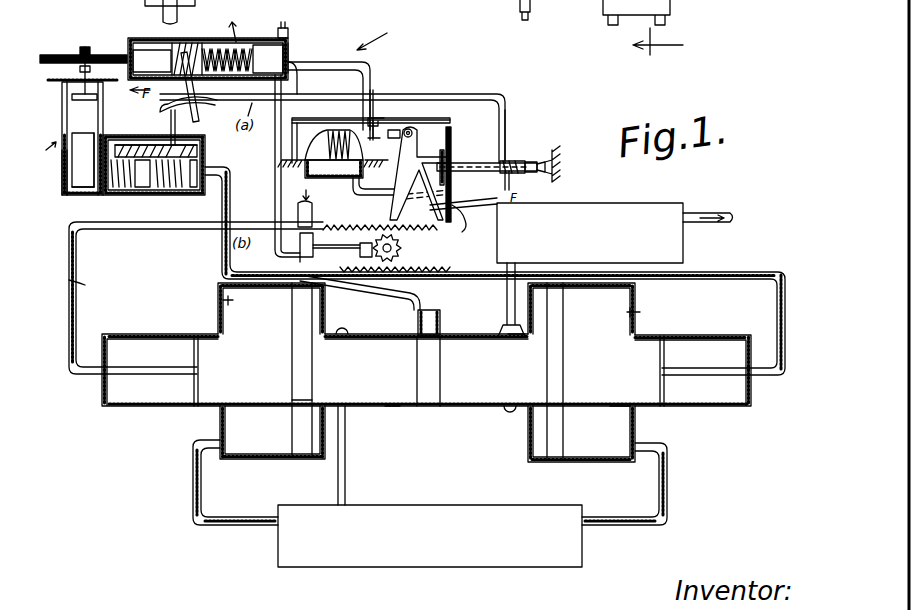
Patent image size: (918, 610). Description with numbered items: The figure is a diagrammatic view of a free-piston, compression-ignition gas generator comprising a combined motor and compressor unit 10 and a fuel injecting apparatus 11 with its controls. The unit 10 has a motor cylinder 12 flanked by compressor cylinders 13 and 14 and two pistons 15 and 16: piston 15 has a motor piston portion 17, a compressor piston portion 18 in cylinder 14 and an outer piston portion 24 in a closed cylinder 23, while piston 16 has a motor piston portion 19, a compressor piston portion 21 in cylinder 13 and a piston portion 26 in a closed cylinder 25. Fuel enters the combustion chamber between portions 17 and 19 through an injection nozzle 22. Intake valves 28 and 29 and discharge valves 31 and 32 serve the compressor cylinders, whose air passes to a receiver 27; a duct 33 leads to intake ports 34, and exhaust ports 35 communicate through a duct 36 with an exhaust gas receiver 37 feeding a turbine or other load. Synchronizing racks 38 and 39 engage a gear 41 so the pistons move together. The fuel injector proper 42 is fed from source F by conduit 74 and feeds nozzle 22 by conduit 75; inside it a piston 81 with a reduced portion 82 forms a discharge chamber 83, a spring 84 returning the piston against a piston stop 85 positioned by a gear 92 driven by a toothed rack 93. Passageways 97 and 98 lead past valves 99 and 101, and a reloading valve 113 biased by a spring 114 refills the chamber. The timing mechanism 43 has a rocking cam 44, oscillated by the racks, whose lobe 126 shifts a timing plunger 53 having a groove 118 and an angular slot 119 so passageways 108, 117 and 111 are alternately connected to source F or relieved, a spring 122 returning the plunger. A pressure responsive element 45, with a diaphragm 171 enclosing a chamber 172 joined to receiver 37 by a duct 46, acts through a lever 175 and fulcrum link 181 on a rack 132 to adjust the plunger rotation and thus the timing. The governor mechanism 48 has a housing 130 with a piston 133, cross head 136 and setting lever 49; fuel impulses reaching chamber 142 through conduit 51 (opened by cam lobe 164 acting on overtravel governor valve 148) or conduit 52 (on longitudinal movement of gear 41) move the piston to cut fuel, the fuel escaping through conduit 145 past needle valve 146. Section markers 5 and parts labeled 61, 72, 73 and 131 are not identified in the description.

The valve 5 is at (658, 44).
The combined motor and compressor unit 10 is at (762, 415).
The fuel injecting apparatus 11 is at (377, 32).
The motor cylinder 12 is at (470, 408).
The compressor cylinder 13 is at (274, 462).
The compressor cylinder 14 is at (578, 463).
The piston 15 is at (567, 417).
The piston 16 is at (288, 416).
The motor piston portion 17 is at (463, 353).
The compressor piston portion 18 is at (552, 320).
The motor piston portion 19 is at (393, 408).
The compressor piston portion 21 is at (290, 312).
The injection nozzle 22 is at (436, 312).
The cylinder 23 is at (718, 406).
The piston portion 24 is at (617, 408).
The cylinder 25 is at (130, 405).
The piston portion 26 is at (240, 397).
The receiver 27 is at (338, 568).
The intake valve 28 is at (618, 318).
The intake valve 29 is at (240, 300).
The discharge valve 31 is at (655, 437).
The discharge valve 32 is at (204, 440).
The duct 33 is at (348, 472).
The air intake ports 34 is at (338, 338).
The exhaust ports 35 is at (517, 338).
The duct 36 is at (502, 290).
The exhaust gas receiver 37 is at (650, 203).
The synchronizing rack 38 is at (710, 279).
The synchronizing rack 39 is at (86, 285).
The gear 41 is at (409, 254).
The fuel injector proper 42 is at (42, 150).
The timing mechanism 43 is at (472, 142).
The rocking cam 44 is at (390, 204).
The pressure responsive element 45 is at (313, 145).
The duct 46 is at (485, 200).
The governor mechanism 48 is at (235, 21).
The lever 49 is at (180, 93).
The conduit 51 is at (336, 62).
The conduit 52 is at (268, 197).
The timing plunger 53 is at (540, 160).
The shaft 61 is at (360, 245).
The valve stem 72 is at (311, 261).
The collar 73 is at (364, 257).
The conduit 74 is at (123, 94).
The conduit 75 is at (218, 258).
The piston 81 is at (62, 123).
The reduced portion 82 is at (80, 193).
The fuel ejection chamber 83 is at (99, 193).
The spring 84 is at (62, 183).
The piston stop 85 is at (70, 97).
The gear 92 is at (90, 50).
The toothed rack 93 is at (46, 52).
The passageway 97 is at (147, 145).
The passageway 98 is at (128, 145).
The valve 99 is at (180, 188).
The valve 101 is at (197, 188).
The passageway 108 is at (508, 104).
The passageway 111 is at (512, 185).
The reloading valve 113 is at (143, 187).
The spring 114 is at (124, 187).
The passageway 117 is at (512, 112).
The circumferential groove 118 is at (512, 161).
The slot 119 is at (486, 163).
The spring 122 is at (556, 155).
The lobe 126 is at (438, 160).
The housing 130 is at (145, 40).
The vertical bar 131 is at (454, 178).
The rack 132 is at (468, 226).
The piston 133 is at (262, 45).
The cross head 136 is at (204, 43).
The chamber 142 is at (300, 48).
The conduit 145 is at (290, 38).
The needle valve 146 is at (285, 27).
The overtravel governor valve 148 is at (375, 184).
The lobe 164 is at (404, 125).
The diaphragm 171 is at (333, 174).
The chamber 172 is at (338, 180).
The lever 175 is at (340, 118).
The fulcrum link 181 is at (294, 118).